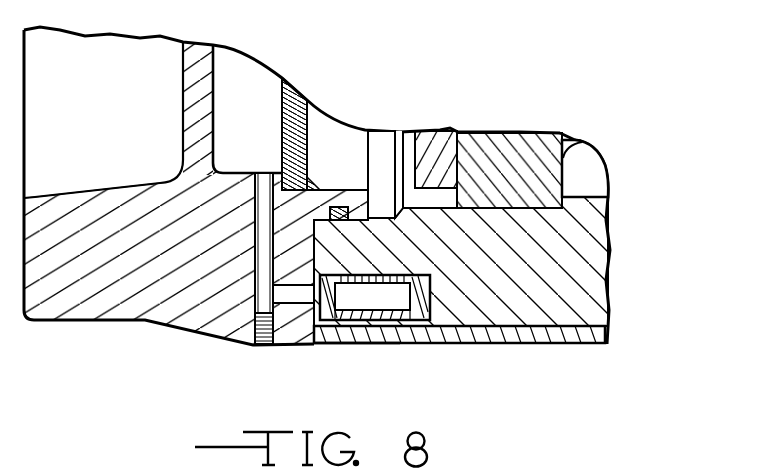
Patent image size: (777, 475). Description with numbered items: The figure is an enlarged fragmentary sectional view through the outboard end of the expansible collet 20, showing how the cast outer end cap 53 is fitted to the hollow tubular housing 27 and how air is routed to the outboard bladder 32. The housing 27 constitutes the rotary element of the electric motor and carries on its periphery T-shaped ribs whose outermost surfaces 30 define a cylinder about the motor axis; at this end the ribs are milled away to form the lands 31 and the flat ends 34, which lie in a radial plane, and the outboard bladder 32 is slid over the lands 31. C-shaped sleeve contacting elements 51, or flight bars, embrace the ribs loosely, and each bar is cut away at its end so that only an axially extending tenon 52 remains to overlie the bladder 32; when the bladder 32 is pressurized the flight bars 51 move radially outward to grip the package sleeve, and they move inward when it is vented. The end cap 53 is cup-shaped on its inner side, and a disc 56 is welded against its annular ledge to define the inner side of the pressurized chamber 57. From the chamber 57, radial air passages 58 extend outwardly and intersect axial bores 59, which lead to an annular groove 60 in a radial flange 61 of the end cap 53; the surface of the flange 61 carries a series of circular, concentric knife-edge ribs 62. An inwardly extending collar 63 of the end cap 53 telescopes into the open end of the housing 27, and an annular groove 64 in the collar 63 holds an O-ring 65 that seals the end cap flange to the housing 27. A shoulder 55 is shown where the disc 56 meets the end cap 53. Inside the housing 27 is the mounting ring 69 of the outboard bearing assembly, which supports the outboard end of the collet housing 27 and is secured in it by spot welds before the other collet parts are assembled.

The expansible collet 20 is at (138, 332).
The hollow tubular housing 27 is at (587, 188).
The outermost surfaces 30 is at (517, 338).
The lands 31 is at (462, 335).
The outboard bladder 32 is at (385, 342).
The flat ends 34 is at (437, 335).
The sleeve contacting elements 51 is at (574, 352).
The axially extending tenon 52 is at (362, 347).
The outer end cap 53 is at (79, 331).
The shoulder 55 is at (289, 176).
The disc 56 is at (310, 125).
The pressurized chamber 57 is at (247, 82).
The radial air passages 58 is at (261, 276).
The axial bores 59 is at (282, 338).
The annular groove 60 is at (283, 294).
The radial flange 61 is at (324, 258).
The knife-edge ribs 62 is at (320, 330).
The collar 63 is at (338, 192).
The annular groove 64 is at (342, 213).
The O-ring 65 is at (345, 233).
The mounting ring 69 is at (588, 150).